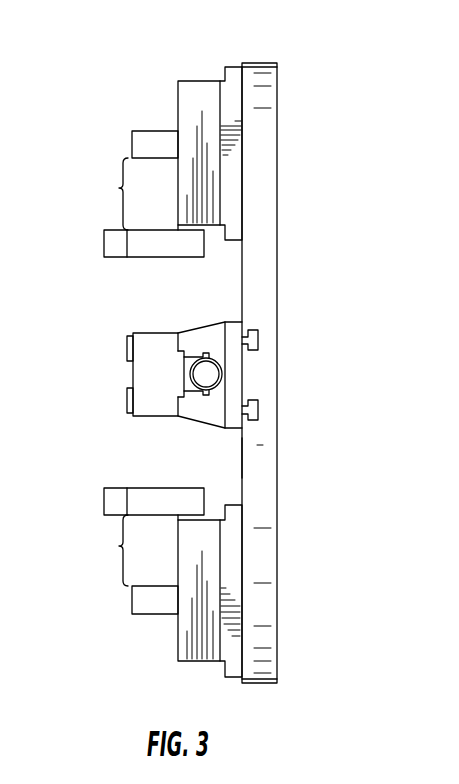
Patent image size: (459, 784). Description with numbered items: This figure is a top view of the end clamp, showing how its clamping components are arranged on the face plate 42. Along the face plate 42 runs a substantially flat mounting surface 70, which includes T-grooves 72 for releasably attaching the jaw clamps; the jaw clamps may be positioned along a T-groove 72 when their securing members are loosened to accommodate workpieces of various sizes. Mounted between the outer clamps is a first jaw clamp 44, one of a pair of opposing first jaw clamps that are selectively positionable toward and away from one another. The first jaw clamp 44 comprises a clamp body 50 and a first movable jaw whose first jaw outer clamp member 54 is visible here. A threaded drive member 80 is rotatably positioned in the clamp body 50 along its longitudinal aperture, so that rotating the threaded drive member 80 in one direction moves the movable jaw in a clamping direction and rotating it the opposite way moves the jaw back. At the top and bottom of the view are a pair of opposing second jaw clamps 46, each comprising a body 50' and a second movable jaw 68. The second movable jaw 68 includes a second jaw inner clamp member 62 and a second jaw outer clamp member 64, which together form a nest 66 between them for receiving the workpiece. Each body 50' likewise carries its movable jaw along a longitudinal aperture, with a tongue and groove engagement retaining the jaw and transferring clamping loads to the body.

The face plate 42 is at (277, 147).
The first jaw clamp 44 is at (206, 343).
The second jaw clamp 46 is at (183, 359).
The clamp body 50 is at (195, 343).
The body 50' is at (249, 342).
The first jaw outer clamp member 54 is at (148, 380).
The second jaw inner clamp member 62 is at (103, 247).
The second jaw outer clamp member 64 is at (130, 148).
The nest 66 is at (119, 190).
The second movable jaw 68 is at (112, 348).
The mounting surface 70 is at (240, 461).
The T-groove 72 is at (258, 412).
The threaded drive member 80 is at (207, 378).